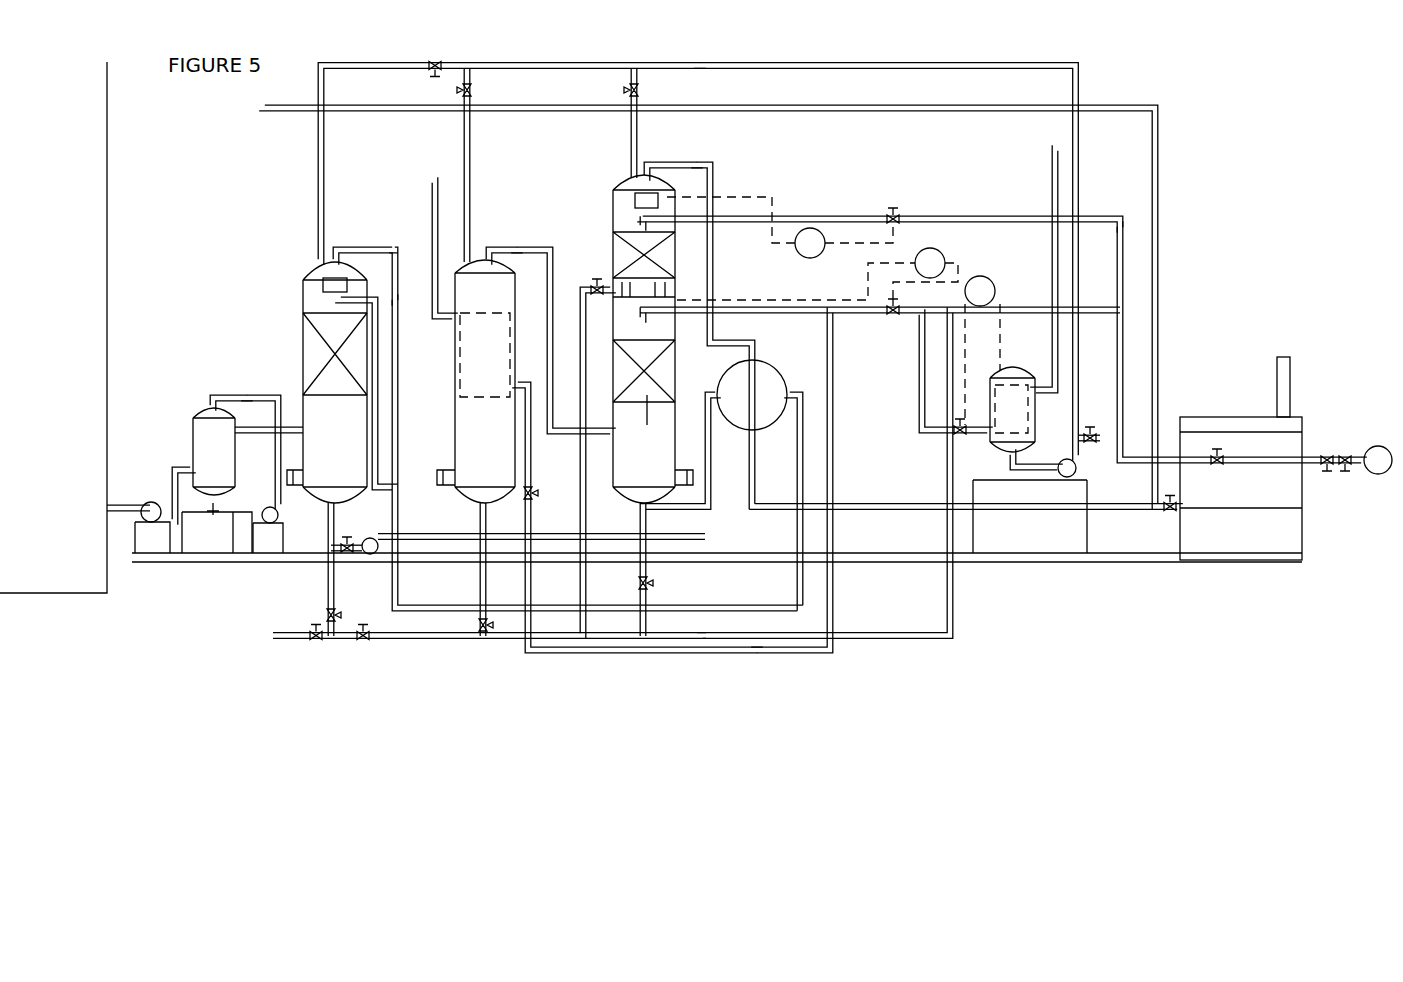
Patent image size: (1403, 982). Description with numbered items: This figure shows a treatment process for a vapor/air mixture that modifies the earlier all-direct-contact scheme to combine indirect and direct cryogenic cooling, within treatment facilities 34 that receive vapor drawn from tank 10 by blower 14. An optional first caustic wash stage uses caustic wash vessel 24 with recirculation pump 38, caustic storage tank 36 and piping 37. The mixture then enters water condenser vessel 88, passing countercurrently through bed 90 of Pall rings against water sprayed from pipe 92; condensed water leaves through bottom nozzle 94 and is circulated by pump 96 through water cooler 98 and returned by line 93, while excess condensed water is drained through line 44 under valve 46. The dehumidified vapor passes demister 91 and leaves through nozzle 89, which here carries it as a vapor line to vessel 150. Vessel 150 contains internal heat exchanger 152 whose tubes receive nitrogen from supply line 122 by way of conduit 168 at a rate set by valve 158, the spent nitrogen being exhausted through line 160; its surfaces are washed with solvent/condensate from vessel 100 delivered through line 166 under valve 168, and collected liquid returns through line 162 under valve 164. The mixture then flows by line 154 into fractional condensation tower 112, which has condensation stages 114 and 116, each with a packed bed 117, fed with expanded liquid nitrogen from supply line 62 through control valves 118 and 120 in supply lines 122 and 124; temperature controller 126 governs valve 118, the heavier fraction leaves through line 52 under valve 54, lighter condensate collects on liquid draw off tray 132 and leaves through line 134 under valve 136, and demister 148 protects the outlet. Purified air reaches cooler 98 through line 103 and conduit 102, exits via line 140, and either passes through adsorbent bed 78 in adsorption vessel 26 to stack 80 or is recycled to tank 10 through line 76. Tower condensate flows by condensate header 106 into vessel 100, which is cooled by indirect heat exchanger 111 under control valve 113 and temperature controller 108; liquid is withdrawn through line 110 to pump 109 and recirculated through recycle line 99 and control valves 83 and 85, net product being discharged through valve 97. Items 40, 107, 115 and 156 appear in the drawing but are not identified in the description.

The tank 10 is at (95, 180).
The blower 14 is at (150, 503).
The caustic wash vessel 24 is at (195, 445).
The adsorption vessel 26 is at (1257, 452).
The treatment facilities 34 is at (193, 359).
The caustic storage tank 36 is at (220, 548).
The piping 37 is at (277, 440).
The recirculation pump 38 is at (268, 560).
The feed inlet line 40 is at (289, 420).
The line 44 is at (335, 632).
The valve 46 is at (328, 616).
The line 52 is at (646, 620).
The valve 54 is at (640, 587).
The supply line 62 is at (1120, 362).
The line 76 is at (785, 110).
The packed bed of adsorbent 78 is at (1225, 428).
The stack 80 is at (1277, 358).
The control valve 83 is at (430, 70).
The valve 85 is at (646, 90).
The water condenser vessel 88 is at (308, 302).
The vapor line 89 is at (341, 252).
The bed of Pall rings 90 is at (312, 347).
The demister 91 is at (322, 287).
The pipe 92 is at (375, 297).
The line 93 is at (706, 407).
The bottom nozzle 94 is at (329, 513).
The pump 96 is at (365, 510).
The valve 97 is at (1088, 431).
The water cooler 98 is at (765, 385).
The recycle line 99 is at (1075, 396).
The solvent/condensate vessel 100 is at (990, 440).
The conduit 102 is at (918, 377).
The line 103 is at (670, 163).
The condensate header 106 is at (890, 636).
The receiver vent line 107 is at (1052, 188).
The temperature controller 108 is at (992, 288).
The pump 109 is at (1078, 470).
The line 110 is at (717, 588).
The indirect heat exchanger 111 is at (1014, 409).
The fractional condensation tower 112 is at (611, 200).
The control valve 113 is at (964, 424).
The condensation stage 114 is at (611, 228).
The liquid nitrogen valve 115 is at (1222, 463).
The condensation stage 116 is at (663, 331).
The packed bed 117 is at (644, 393).
The control valve 118 is at (890, 314).
The control valve 120 is at (893, 218).
The supply line 122 is at (735, 310).
The supply line 124 is at (792, 217).
The temperature controller 126 is at (943, 260).
The liquid draw off tray 132 is at (672, 297).
The line 134 is at (586, 288).
The valve 136 is at (670, 197).
The line 140 is at (899, 503).
The demister 148 is at (638, 194).
The vessel 150 is at (461, 432).
The internal heat exchanger 152 is at (461, 380).
The line 154 is at (537, 248).
The vessel side line 156 is at (528, 416).
The valve 158 is at (532, 494).
The line 160 is at (432, 222).
The line 162 is at (482, 567).
The valve 164 is at (482, 627).
The line 166 is at (472, 153).
The valve 168 is at (478, 91).